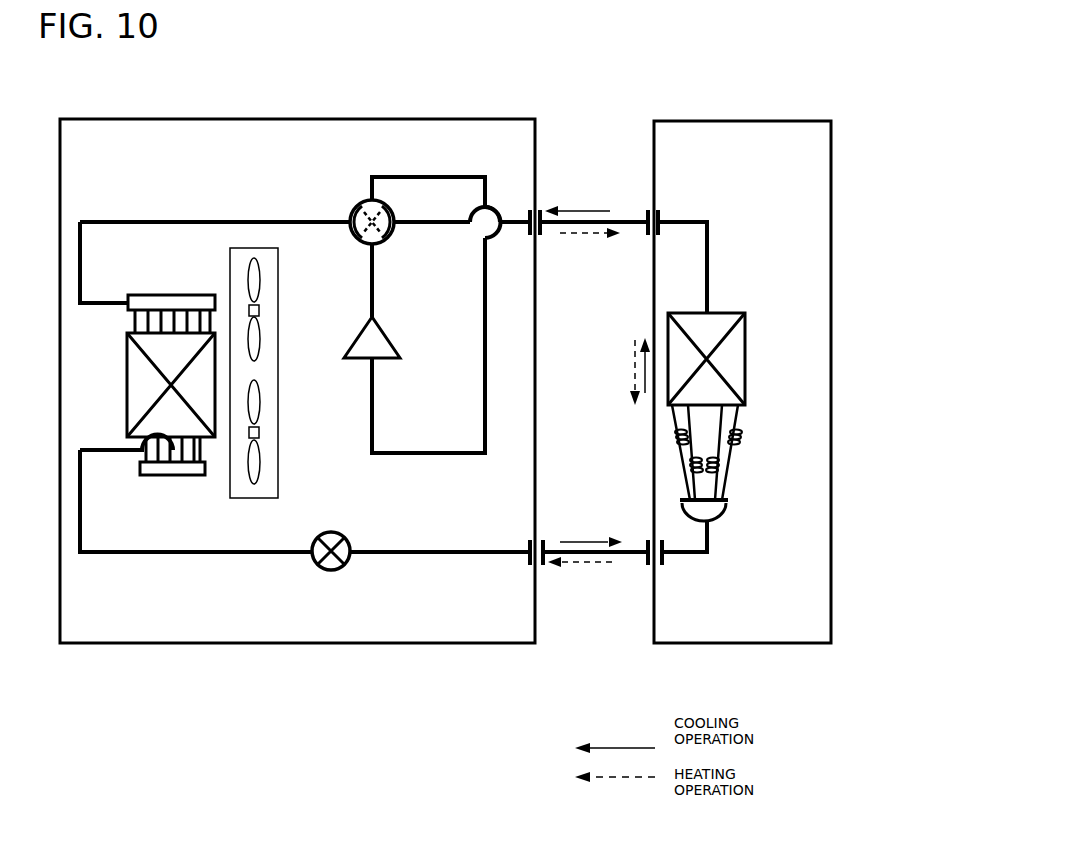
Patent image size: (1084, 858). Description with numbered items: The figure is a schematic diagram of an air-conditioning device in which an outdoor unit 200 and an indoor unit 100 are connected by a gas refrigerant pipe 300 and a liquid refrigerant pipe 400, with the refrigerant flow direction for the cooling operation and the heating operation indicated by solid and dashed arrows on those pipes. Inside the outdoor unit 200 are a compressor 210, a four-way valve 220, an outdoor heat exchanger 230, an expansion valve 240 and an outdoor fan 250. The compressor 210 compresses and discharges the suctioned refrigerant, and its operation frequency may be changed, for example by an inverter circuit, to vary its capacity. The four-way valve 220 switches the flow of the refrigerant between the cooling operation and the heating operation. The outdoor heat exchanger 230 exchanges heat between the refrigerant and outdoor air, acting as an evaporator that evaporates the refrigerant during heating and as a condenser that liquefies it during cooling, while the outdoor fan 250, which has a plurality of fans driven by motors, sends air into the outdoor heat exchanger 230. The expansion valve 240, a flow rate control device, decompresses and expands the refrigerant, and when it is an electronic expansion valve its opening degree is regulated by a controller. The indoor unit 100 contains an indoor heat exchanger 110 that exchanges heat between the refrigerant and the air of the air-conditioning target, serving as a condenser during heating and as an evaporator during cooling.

The indoor unit 100 is at (728, 643).
The indoor heat exchanger 110 is at (719, 318).
The outdoor unit 200 is at (283, 643).
The compressor 210 is at (385, 328).
The four-way valve 220 is at (352, 203).
The outdoor heat exchanger 230 is at (127, 365).
The expansion valve 240 is at (336, 533).
The outdoor fan 250 is at (278, 487).
The gas refrigerant pipe 300 is at (617, 220).
The liquid refrigerant pipe 400 is at (620, 551).